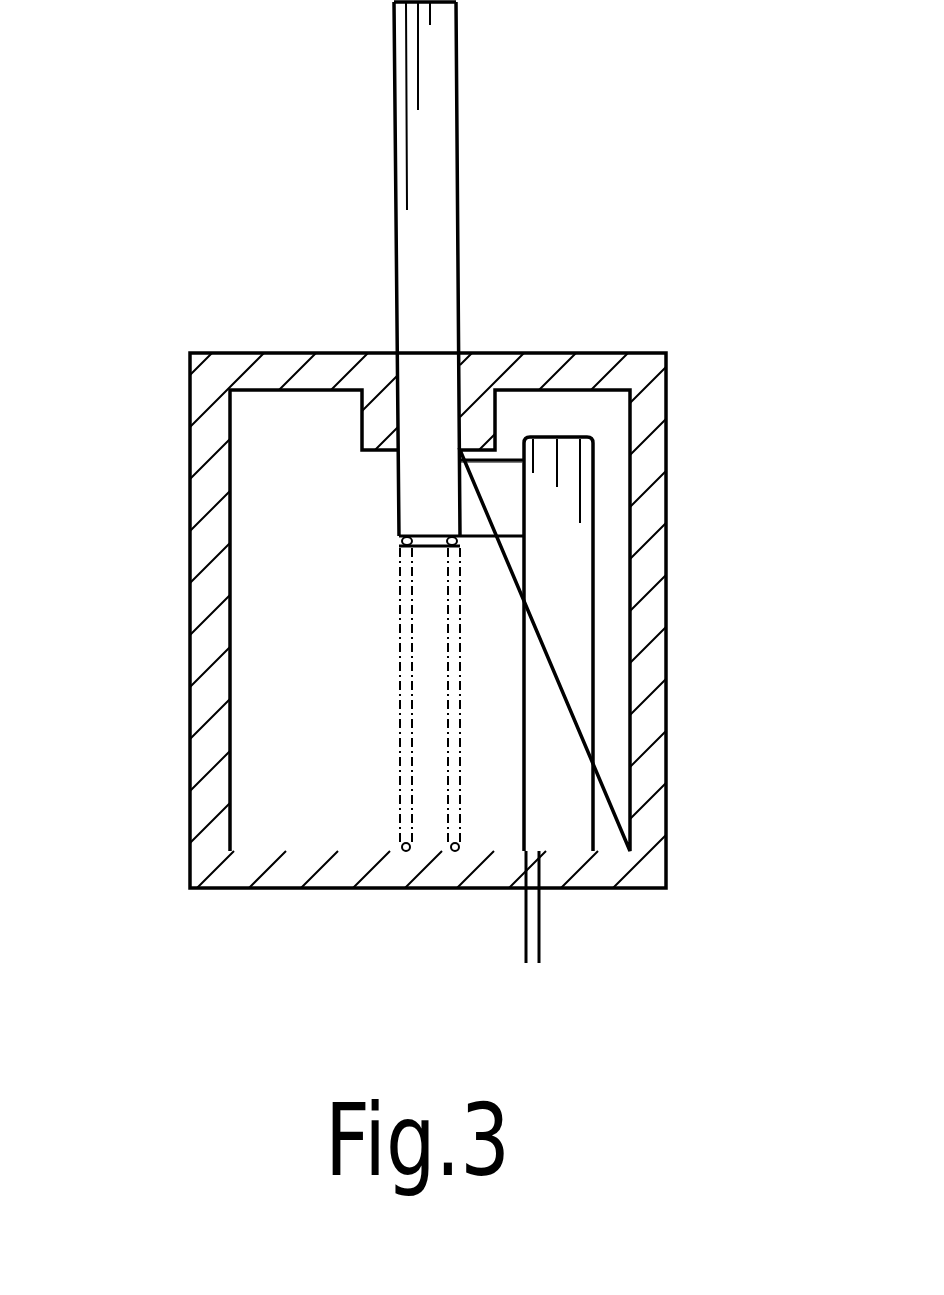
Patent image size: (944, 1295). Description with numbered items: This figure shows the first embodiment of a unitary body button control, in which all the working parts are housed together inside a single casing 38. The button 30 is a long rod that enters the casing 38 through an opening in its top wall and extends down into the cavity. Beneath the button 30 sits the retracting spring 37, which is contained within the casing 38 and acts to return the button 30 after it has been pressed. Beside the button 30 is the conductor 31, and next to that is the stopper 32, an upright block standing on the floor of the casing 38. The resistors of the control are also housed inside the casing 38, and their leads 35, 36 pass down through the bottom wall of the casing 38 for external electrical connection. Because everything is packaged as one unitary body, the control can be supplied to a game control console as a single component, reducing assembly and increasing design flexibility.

The button 30 is at (440, 130).
The conductor 31 is at (488, 527).
The stopper 32 is at (578, 583).
The lead 35 is at (522, 938).
The lead 36 is at (540, 926).
The retracting spring 37 is at (400, 608).
The casing 38 is at (207, 507).